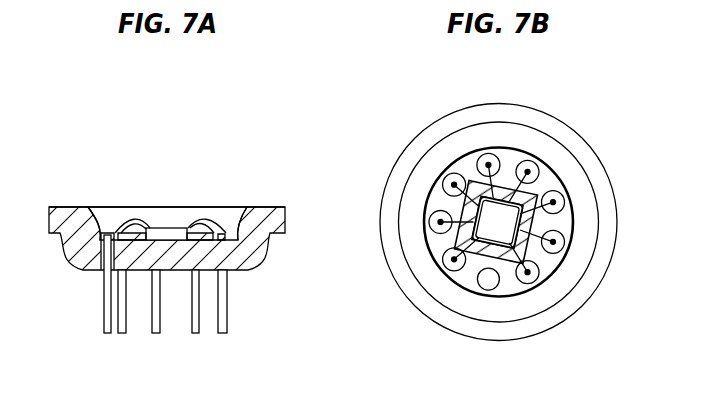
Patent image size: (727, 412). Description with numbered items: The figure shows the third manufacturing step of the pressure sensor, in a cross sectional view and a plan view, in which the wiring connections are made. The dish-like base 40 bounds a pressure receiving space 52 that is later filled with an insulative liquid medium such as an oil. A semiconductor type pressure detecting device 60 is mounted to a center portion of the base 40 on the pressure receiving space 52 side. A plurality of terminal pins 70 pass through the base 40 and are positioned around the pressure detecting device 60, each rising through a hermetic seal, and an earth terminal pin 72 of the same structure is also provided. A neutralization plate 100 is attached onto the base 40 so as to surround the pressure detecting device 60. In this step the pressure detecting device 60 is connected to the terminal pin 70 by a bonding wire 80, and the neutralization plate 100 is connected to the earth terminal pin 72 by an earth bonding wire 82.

In FIG. 7A, the dish-like base 40 is at (270, 228).
In FIG. 7B, the dish-like base 40 is at (498, 222).
In FIG. 7A, the pressure receiving space 52 is at (230, 218).
In FIG. 7A, the semiconductor type pressure detecting device 60 is at (165, 233).
In FIG. 7A, the terminal pins 70 is at (196, 334).
In FIG. 7B, the terminal pins 70 is at (497, 221).
In FIG. 7A, the earth terminal pin 72 is at (122, 334).
In FIG. 7B, the earth terminal pin 72 is at (441, 179).
In FIG. 7A, the bonding wire 80 is at (203, 228).
In FIG. 7B, the bonding wire 80 is at (566, 185).
In FIG. 7A, the earth bonding wire 82 is at (123, 232).
In FIG. 7B, the earth bonding wire 82 is at (466, 182).
In FIG. 7B, the neutralization plate 100 is at (500, 187).